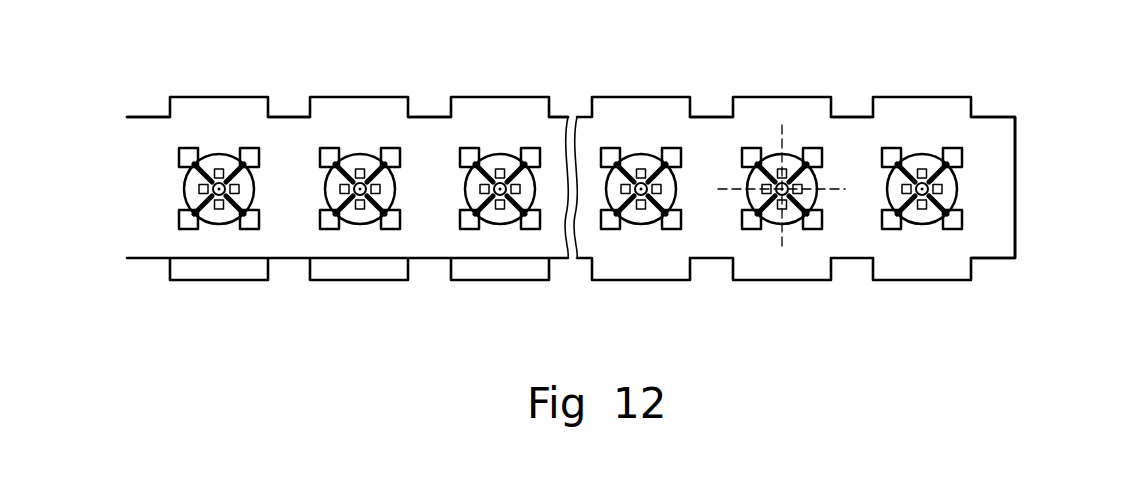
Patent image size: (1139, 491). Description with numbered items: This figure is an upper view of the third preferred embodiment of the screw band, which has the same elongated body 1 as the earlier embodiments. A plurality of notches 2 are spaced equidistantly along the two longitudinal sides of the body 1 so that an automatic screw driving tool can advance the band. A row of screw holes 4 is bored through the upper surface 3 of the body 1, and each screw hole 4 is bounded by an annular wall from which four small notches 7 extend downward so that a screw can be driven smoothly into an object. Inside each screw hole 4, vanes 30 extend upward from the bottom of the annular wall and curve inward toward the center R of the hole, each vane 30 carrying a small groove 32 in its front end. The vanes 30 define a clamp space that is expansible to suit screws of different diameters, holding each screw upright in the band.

The body 1 is at (1015, 190).
The notches 2 is at (153, 112).
The upper surface 3 is at (985, 133).
The screw hole 4 is at (961, 185).
The small notches 7 is at (189, 153).
The vanes 30 is at (211, 156).
The small groove 32 is at (205, 205).
The center of the screw hole R is at (787, 183).